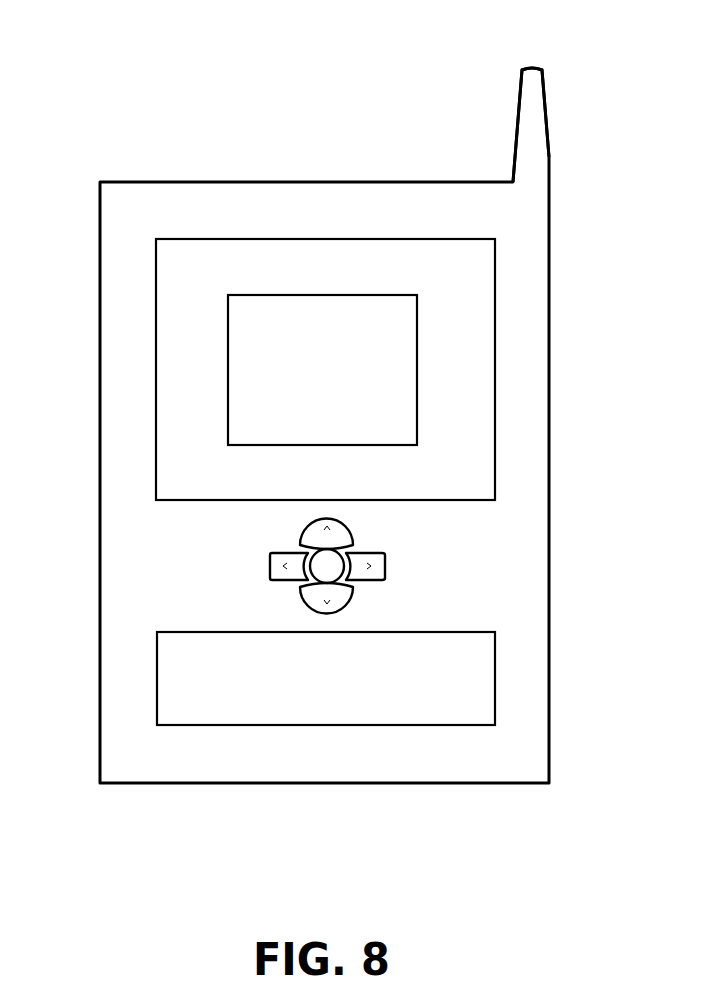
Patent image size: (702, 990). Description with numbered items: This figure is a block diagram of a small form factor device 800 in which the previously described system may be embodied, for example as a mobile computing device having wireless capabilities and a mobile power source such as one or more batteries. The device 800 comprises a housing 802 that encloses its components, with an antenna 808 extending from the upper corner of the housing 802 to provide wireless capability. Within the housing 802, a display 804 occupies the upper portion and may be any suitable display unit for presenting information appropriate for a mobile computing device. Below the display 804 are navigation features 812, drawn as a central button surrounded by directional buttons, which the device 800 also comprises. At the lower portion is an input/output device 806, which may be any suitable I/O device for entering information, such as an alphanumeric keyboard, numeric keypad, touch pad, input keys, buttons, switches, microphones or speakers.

The small form factor device 800 is at (118, 88).
The housing 802 is at (550, 390).
The display 804 is at (496, 258).
The input/output (I/O) device 806 is at (496, 668).
The antenna 808 is at (518, 118).
The navigation features 812 is at (397, 558).